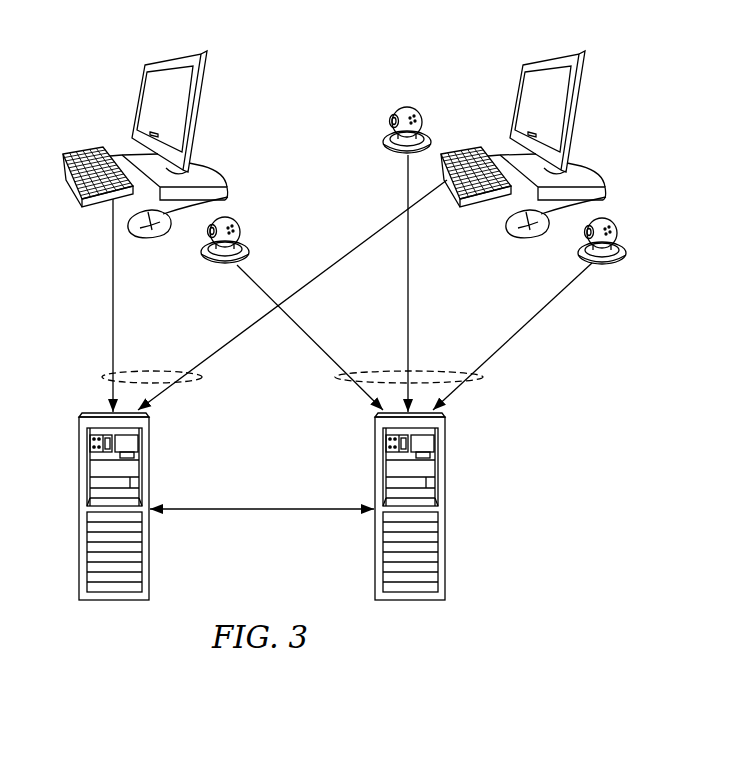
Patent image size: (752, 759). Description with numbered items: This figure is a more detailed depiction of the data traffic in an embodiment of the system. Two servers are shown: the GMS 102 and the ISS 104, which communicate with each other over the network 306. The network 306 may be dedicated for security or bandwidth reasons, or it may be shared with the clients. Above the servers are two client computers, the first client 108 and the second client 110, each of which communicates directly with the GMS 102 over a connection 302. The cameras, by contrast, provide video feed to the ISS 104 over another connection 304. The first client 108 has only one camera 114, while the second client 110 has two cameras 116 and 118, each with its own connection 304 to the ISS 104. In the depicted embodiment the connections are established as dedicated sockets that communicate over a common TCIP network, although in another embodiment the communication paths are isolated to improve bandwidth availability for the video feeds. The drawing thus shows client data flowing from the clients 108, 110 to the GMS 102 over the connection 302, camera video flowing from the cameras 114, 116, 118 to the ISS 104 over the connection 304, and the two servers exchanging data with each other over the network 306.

The GMS 102 is at (78, 533).
The ISS 104 is at (445, 533).
The first client 108 is at (202, 112).
The second client 110 is at (579, 112).
The camera 114 is at (240, 218).
The camera 116 is at (420, 112).
The camera 118 is at (627, 250).
The connection 302 is at (102, 376).
The connection 304 is at (487, 378).
The network 306 is at (260, 511).